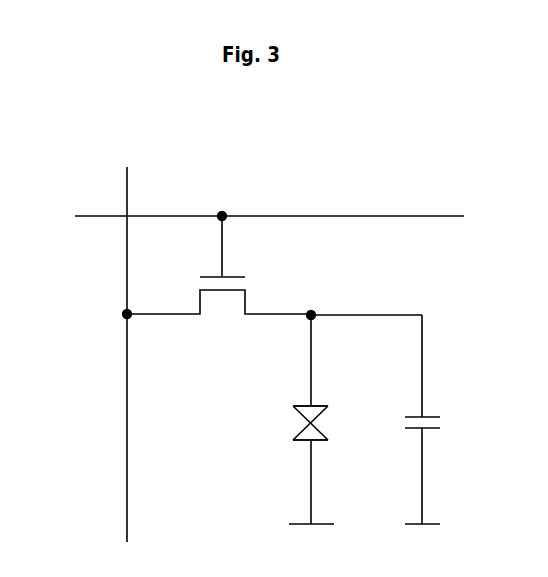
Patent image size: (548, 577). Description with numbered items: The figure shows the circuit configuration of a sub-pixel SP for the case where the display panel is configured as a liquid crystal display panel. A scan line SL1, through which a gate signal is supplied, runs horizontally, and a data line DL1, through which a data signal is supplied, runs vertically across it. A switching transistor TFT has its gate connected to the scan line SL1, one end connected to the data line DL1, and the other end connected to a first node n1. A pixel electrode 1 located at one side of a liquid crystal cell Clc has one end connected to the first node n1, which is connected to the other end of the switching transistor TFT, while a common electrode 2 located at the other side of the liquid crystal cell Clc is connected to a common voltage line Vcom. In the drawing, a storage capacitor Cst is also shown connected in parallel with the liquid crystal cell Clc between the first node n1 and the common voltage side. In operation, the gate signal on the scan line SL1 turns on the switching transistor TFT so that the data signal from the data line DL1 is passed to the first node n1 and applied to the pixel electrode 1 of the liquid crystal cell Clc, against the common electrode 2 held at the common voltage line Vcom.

The sub-pixel SP is at (66, 161).
The data line DL1 is at (127, 343).
The scan line SL1 is at (248, 219).
The switching transistor TFT is at (217, 277).
The first node n1 is at (361, 305).
The pixel electrode 1 is at (300, 404).
The common electrode 2 is at (303, 442).
The liquid crystal cell Clc is at (329, 419).
The storage capacitor Cst is at (442, 419).
The common voltage line Vcom is at (311, 540).